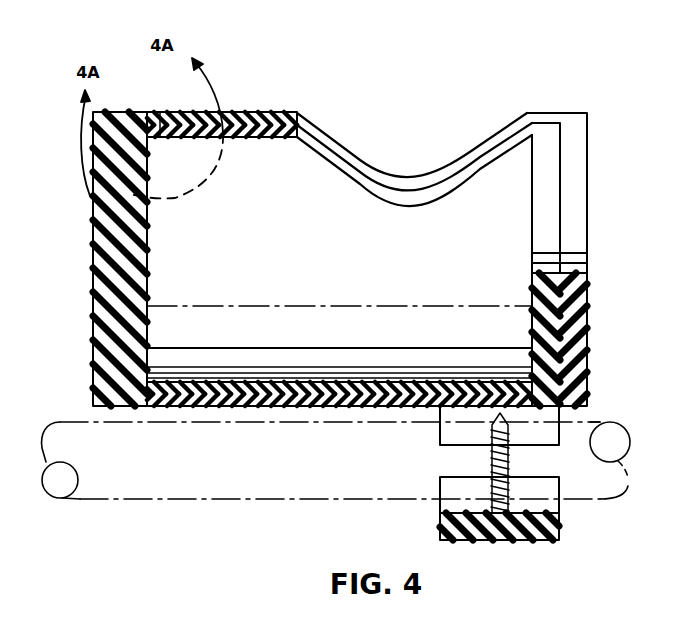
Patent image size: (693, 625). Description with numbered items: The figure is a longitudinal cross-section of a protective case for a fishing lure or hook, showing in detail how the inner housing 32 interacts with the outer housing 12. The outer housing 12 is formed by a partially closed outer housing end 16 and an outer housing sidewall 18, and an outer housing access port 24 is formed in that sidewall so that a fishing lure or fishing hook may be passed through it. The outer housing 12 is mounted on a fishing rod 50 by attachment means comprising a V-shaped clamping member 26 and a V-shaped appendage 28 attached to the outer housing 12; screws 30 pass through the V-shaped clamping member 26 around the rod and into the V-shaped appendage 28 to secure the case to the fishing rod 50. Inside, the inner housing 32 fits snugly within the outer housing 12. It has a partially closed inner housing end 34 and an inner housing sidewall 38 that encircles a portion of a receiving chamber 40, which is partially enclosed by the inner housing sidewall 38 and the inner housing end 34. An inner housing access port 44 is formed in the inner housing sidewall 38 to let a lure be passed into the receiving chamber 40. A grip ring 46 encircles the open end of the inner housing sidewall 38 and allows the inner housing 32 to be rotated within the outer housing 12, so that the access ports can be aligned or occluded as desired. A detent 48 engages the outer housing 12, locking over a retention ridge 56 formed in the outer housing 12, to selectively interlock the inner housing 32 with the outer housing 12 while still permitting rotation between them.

The outer housing 12 is at (596, 259).
The outer housing end 16 is at (580, 183).
The outer housing sidewall 18 is at (240, 122).
The outer housing access port 24 is at (503, 130).
The V-shaped clamping member 26 is at (518, 541).
The V-shaped appendage 28 is at (542, 417).
The screws 30 is at (490, 458).
The inner housing 32 is at (522, 283).
The inner housing end 34 is at (552, 152).
The inner housing sidewall 38 is at (257, 140).
The receiving chamber 40 is at (318, 262).
The inner housing access port 44 is at (467, 188).
The grip ring 46 is at (93, 232).
The detent 48 is at (160, 116).
The fishing rod 50 is at (607, 483).
The retention ridge 56 is at (148, 138).